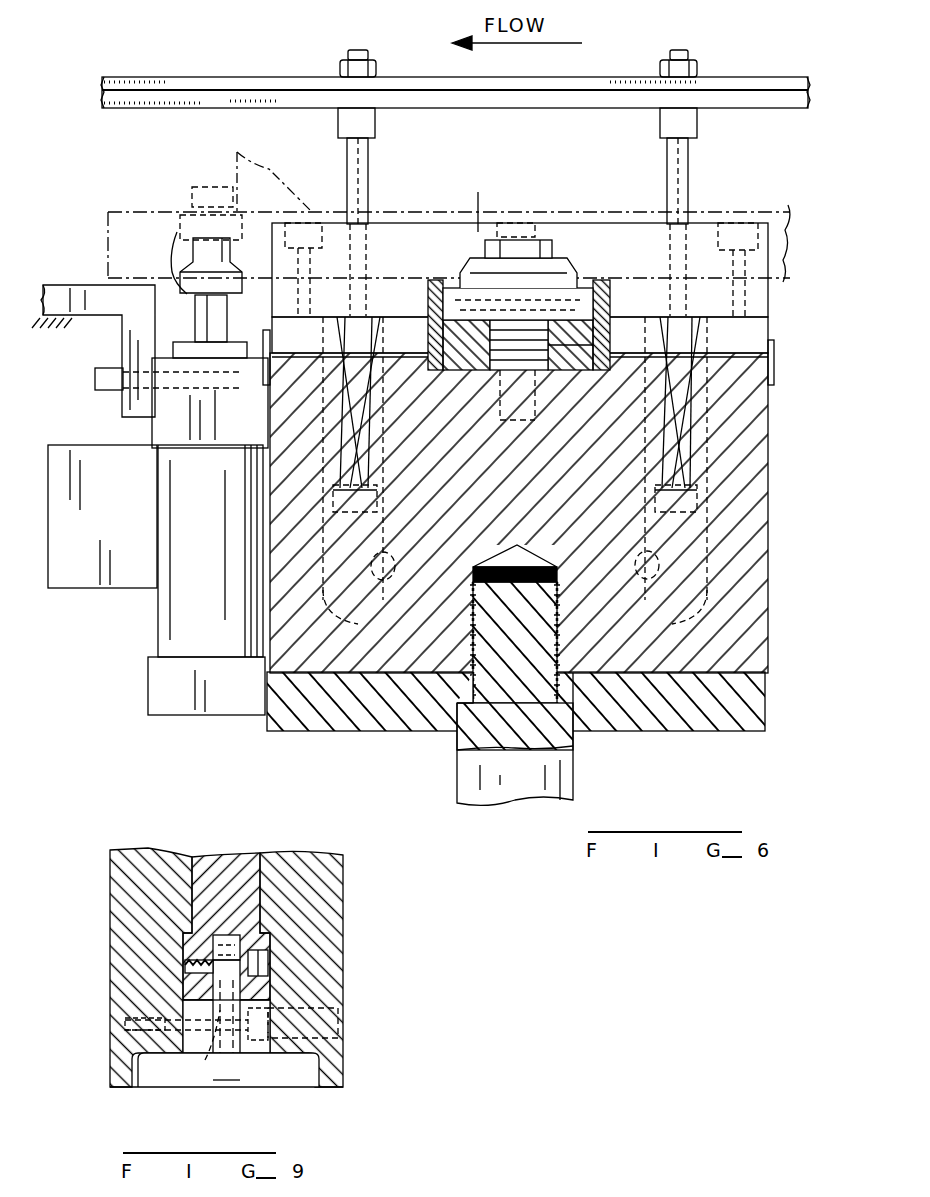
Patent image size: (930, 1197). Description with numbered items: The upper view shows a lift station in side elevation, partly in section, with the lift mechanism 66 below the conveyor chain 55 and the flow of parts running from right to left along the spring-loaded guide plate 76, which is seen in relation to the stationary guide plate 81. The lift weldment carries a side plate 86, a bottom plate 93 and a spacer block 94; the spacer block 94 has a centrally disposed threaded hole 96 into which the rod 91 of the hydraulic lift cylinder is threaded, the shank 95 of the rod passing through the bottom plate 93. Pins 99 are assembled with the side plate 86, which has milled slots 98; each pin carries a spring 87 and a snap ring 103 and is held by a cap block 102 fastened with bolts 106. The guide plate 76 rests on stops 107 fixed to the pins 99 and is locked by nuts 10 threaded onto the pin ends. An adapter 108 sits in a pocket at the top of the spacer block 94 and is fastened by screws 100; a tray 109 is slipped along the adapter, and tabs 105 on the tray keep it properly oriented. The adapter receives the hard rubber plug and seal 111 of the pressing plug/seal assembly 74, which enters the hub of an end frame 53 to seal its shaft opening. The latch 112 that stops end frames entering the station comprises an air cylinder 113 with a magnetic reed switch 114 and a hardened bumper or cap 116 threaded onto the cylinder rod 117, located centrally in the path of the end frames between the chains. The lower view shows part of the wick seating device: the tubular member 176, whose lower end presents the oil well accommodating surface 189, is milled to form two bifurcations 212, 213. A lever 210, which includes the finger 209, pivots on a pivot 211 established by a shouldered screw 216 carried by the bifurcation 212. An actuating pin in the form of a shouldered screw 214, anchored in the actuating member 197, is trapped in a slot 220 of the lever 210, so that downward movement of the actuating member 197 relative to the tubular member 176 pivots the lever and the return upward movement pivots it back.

In FIG. 6, the nut 10 is at (355, 52).
In FIG. 6, the end frame 53 is at (232, 160).
In FIG. 6, the conveyor chain 55 is at (130, 208).
In FIG. 6, the lift mechanism 66 is at (742, 737).
In FIG. 6, the pressing plug/seal assembly 74 is at (578, 270).
In FIG. 6, the guide plate 76 is at (302, 79).
In FIG. 6, the stationary guide plate 81 is at (136, 80).
In FIG. 6, the side plate 86 is at (770, 318).
In FIG. 6, the spring 87 is at (375, 403).
In FIG. 6, the rod 91 is at (471, 596).
In FIG. 6, the bottom plate 93 is at (394, 727).
In FIG. 6, the spacer block 94 is at (768, 574).
In FIG. 6, the stem shank 95 is at (573, 698).
In FIG. 6, the threaded hole 96 is at (556, 600).
In FIG. 6, the slot 98 is at (393, 562).
In FIG. 6, the pin 99 is at (369, 161).
In FIG. 6, the screw 100 is at (508, 387).
In FIG. 6, the cap block 102 is at (627, 225).
In FIG. 6, the snap ring 103 is at (379, 497).
In FIG. 6, the tab 105 is at (262, 350).
In FIG. 6, the bolt 106 is at (302, 226).
In FIG. 6, the stop 107 is at (376, 120).
In FIG. 6, the adapter 108 is at (433, 280).
In FIG. 6, the tray 109 is at (268, 332).
In FIG. 6, the plug and seal 111 is at (482, 201).
In FIG. 6, the latch 112 is at (260, 232).
In FIG. 6, the air cylinder 113 is at (206, 580).
In FIG. 6, the magnetic reed switch 114 is at (102, 516).
In FIG. 6, the bumper 116 is at (172, 220).
In FIG. 6, the rod 117 is at (200, 315).
In FIG. 9, the tubular member 176 is at (125, 850).
In FIG. 9, the oil well accommodating surface 189 is at (170, 1059).
In FIG. 9, the actuating member 197 is at (226, 953).
In FIG. 9, the finger 209 is at (228, 1078).
In FIG. 9, the lever 210 is at (230, 938).
In FIG. 9, the pivot 211 is at (204, 1073).
In FIG. 9, the bifurcation 212 is at (110, 999).
In FIG. 9, the bifurcation 213 is at (340, 998).
In FIG. 9, the shouldered screw 214 is at (270, 963).
In FIG. 9, the shouldered screw 216 is at (270, 1060).
In FIG. 9, the slot 220 is at (187, 976).